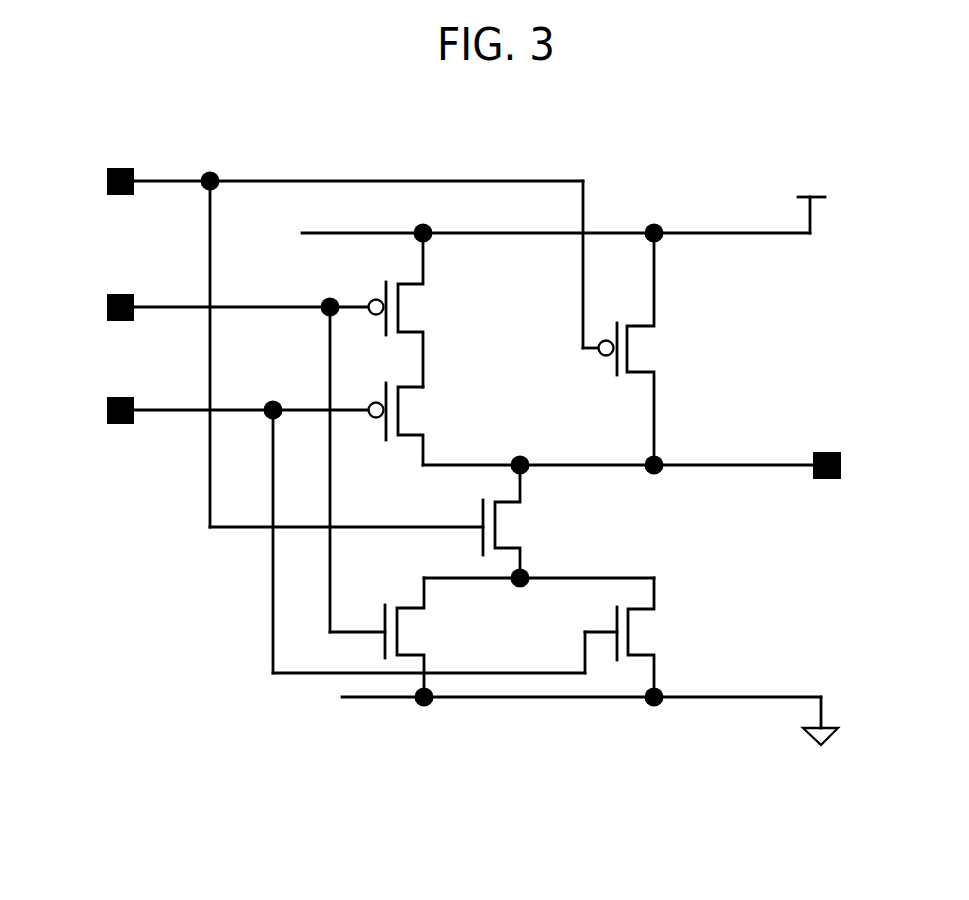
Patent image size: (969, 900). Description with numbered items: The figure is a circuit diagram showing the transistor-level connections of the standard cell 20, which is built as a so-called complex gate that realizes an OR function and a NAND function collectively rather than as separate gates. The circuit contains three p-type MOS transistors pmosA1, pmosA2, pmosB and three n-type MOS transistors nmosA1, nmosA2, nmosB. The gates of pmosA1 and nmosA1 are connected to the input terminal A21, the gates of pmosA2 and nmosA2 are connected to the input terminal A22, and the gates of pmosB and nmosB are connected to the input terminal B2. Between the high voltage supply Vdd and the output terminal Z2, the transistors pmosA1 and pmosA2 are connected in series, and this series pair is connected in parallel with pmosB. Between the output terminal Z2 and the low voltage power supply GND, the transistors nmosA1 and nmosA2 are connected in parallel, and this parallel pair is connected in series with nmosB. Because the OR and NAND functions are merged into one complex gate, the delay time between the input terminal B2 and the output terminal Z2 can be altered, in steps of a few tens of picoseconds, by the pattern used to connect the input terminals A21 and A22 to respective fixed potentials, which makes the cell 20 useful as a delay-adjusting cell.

The cell 20 is at (601, 167).
The input terminal B2 is at (329, 347).
The input terminal A21 is at (217, 462).
The input terminal A22 is at (333, 534).
The output terminal Z2 is at (653, 464).
The high voltage supply Vdd is at (568, 202).
The low voltage power supply GND is at (597, 734).
The p-type MOS transistor pmosA1 is at (420, 307).
The p-type MOS transistor pmosA2 is at (420, 410).
The p-type MOS transistor pmosB is at (653, 350).
The n-type MOS transistor nmosA1 is at (427, 630).
The n-type MOS transistor nmosA2 is at (652, 630).
The n-type MOS transistor nmosB is at (513, 527).